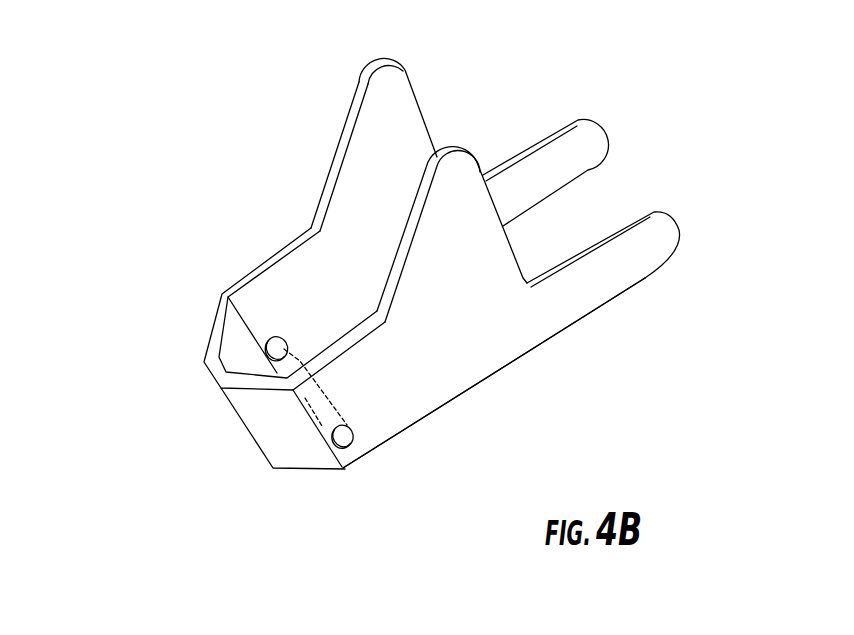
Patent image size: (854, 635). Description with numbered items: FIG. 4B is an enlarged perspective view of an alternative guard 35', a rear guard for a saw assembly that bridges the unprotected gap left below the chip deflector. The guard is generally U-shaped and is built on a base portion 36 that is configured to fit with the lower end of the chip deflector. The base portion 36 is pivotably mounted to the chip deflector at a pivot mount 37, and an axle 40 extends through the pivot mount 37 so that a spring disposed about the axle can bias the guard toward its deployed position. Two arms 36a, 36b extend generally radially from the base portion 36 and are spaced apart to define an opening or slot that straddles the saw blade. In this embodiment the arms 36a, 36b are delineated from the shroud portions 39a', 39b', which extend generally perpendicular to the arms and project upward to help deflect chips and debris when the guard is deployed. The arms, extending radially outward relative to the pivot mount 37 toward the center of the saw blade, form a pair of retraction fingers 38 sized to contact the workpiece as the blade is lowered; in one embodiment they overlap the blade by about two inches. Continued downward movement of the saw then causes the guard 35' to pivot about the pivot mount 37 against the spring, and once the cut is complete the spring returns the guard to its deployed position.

The base portion 36 is at (263, 263).
The shroud portion 39a' is at (400, 144).
The arm 36a is at (580, 140).
The shroud portion 39b' is at (544, 234).
The arm 36b is at (647, 248).
The retraction fingers 38 is at (586, 303).
The alternative guard 35' is at (494, 378).
The pivot mount 37 is at (345, 447).
The axle 40 is at (300, 361).